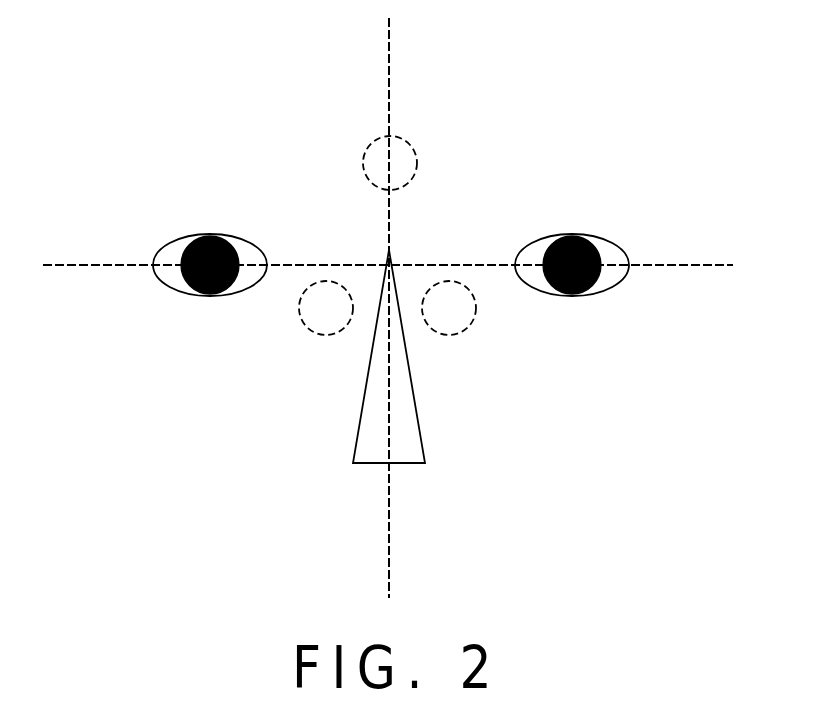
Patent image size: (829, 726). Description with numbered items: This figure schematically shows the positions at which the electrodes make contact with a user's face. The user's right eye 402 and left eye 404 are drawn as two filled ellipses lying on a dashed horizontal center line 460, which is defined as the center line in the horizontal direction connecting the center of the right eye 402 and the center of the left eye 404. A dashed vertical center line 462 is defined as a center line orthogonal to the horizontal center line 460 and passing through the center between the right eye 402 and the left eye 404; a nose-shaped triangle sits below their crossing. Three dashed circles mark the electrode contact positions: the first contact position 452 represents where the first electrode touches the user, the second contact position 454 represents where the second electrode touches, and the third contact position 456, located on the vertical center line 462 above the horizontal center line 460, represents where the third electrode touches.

The right eye 402 is at (237, 234).
The left eye 404 is at (598, 234).
The first contact position 452 is at (306, 318).
The second contact position 454 is at (470, 318).
The third contact position 456 is at (405, 158).
The horizontal center line 460 is at (689, 265).
The vertical center line 462 is at (390, 50).